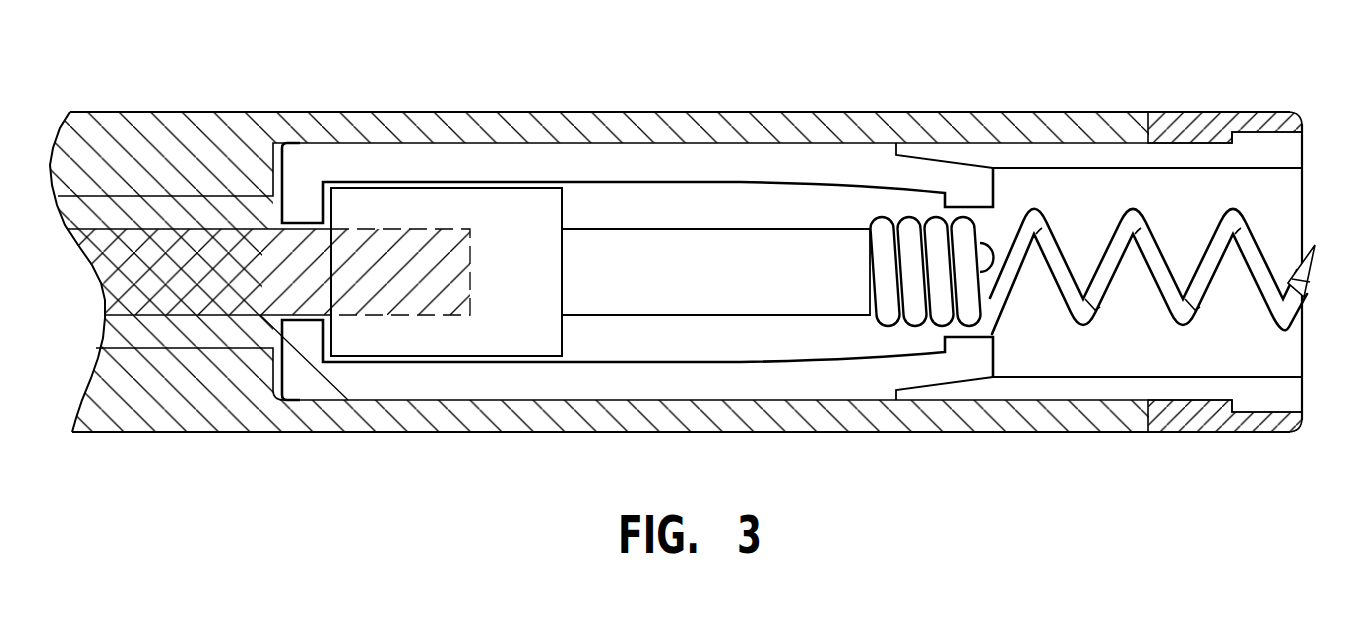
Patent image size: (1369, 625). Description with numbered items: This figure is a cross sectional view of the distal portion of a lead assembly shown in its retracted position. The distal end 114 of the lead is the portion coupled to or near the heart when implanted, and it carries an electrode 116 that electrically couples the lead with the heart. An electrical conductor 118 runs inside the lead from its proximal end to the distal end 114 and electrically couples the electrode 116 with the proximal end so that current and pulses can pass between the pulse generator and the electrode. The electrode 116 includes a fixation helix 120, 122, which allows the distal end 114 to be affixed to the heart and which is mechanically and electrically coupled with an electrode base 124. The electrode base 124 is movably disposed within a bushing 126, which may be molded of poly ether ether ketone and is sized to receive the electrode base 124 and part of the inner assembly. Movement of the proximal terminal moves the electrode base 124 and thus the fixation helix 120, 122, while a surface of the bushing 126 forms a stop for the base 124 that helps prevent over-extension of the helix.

The distal end 114 is at (1245, 112).
The electrode 116 is at (1222, 225).
The electrical conductor 118 is at (202, 233).
The fixation helix 120 is at (1097, 303).
The fixation helix 122 is at (1195, 313).
The electrode base 124 is at (447, 347).
The bushing 126 is at (683, 163).